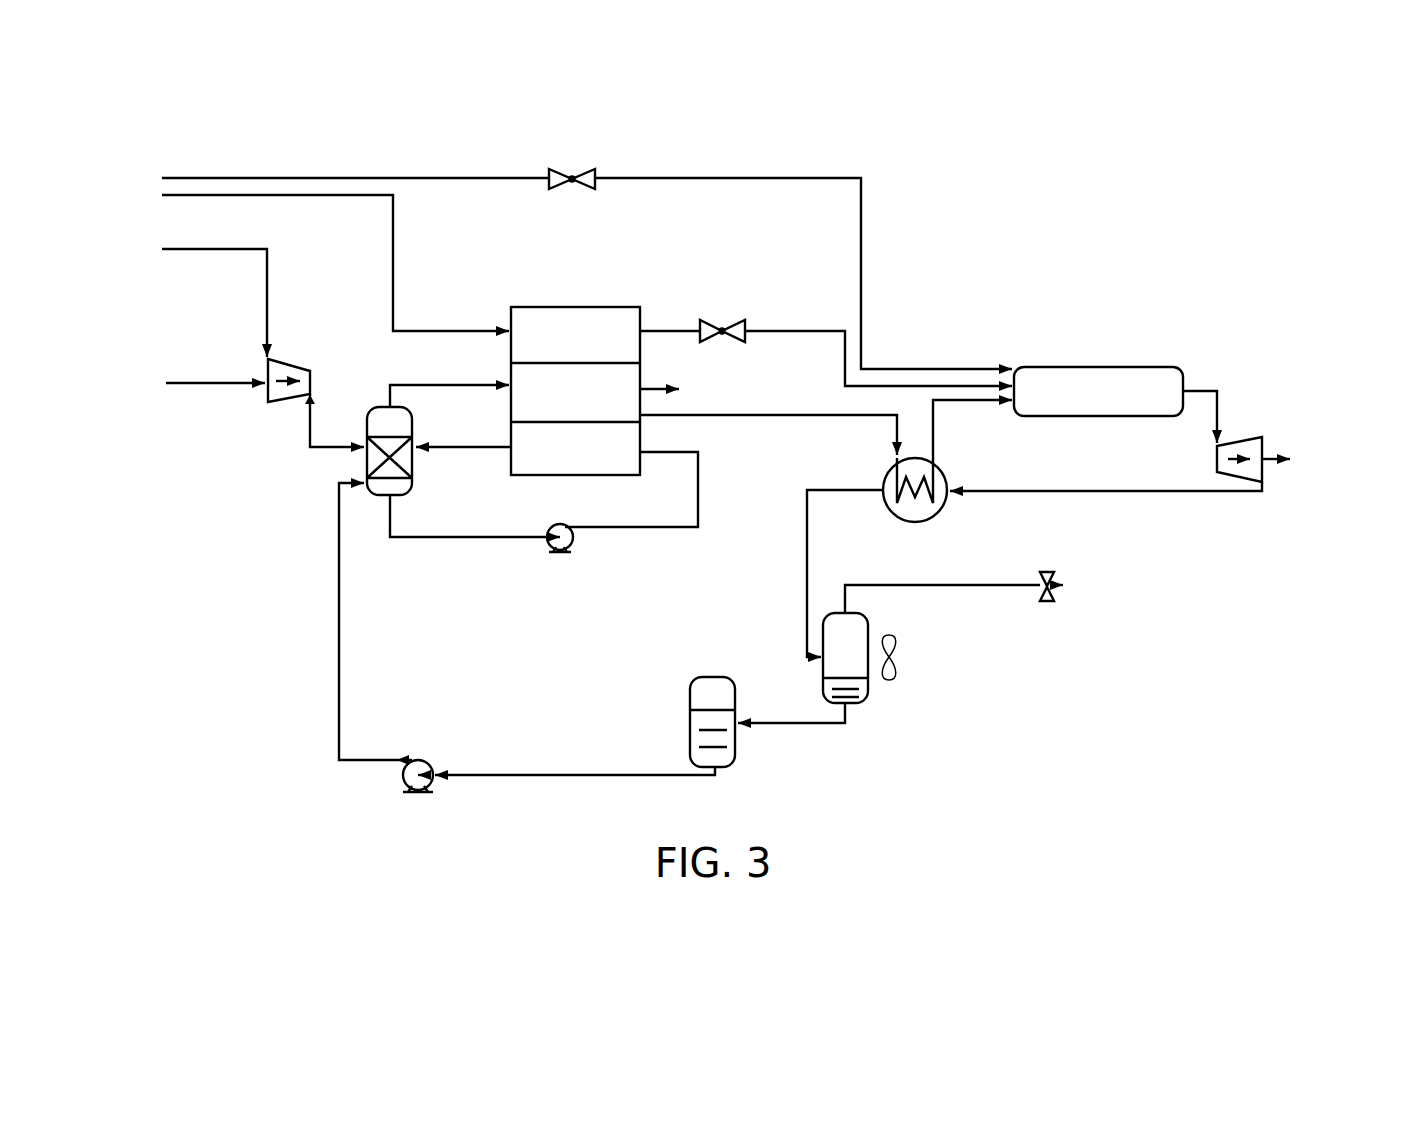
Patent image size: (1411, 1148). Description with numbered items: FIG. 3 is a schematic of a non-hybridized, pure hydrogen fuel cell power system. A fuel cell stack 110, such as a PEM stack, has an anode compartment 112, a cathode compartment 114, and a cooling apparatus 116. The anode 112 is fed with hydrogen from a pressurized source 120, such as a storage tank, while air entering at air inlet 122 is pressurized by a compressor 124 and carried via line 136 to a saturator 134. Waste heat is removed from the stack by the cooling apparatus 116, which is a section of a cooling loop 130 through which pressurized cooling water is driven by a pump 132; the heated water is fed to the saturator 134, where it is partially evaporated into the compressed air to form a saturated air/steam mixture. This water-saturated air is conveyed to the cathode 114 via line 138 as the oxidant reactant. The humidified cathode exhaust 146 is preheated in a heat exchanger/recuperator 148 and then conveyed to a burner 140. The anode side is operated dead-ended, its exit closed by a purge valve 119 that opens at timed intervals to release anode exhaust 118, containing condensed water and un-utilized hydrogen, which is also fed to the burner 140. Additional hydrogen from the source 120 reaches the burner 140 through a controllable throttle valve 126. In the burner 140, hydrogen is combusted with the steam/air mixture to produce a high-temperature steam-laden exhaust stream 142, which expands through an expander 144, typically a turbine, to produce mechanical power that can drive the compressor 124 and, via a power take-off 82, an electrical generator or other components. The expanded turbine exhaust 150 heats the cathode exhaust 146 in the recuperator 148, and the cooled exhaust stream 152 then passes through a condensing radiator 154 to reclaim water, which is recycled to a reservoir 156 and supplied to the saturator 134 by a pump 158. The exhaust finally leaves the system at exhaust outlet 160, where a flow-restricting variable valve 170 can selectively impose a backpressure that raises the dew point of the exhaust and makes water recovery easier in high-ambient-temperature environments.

The power take-off 82 is at (1265, 470).
The fuel cell stack 110 is at (641, 307).
The anode compartment 112 is at (510, 316).
The cathode compartment 114 is at (510, 379).
The cooling apparatus 116 is at (510, 438).
The anode exhaust 118 is at (670, 334).
The purge valve 119 is at (746, 331).
The pressurized source 120 is at (70, 176).
The air inlet 122 is at (70, 251).
The compressor 124 is at (266, 372).
The throttle valve 126 is at (572, 177).
The cooling loop 130 is at (468, 535).
The pump 132 is at (574, 543).
The saturator 134 is at (366, 422).
The line 136 is at (309, 423).
The line 138 is at (412, 387).
The burner 140 is at (1103, 366).
The exhaust stream 142 is at (1218, 391).
The expander 144 is at (1216, 460).
The cathode exhaust 146 is at (715, 416).
The heat exchanger/recuperator 148 is at (942, 468).
The turbine exhaust 150 is at (1068, 492).
The cooled exhaust stream 152 is at (815, 573).
The condensing radiator 154 is at (868, 690).
The reservoir 156 is at (736, 756).
The pump 158 is at (428, 686).
The exhaust outlet 160 is at (1025, 586).
The flow-restricting variable valve 170 is at (1050, 572).